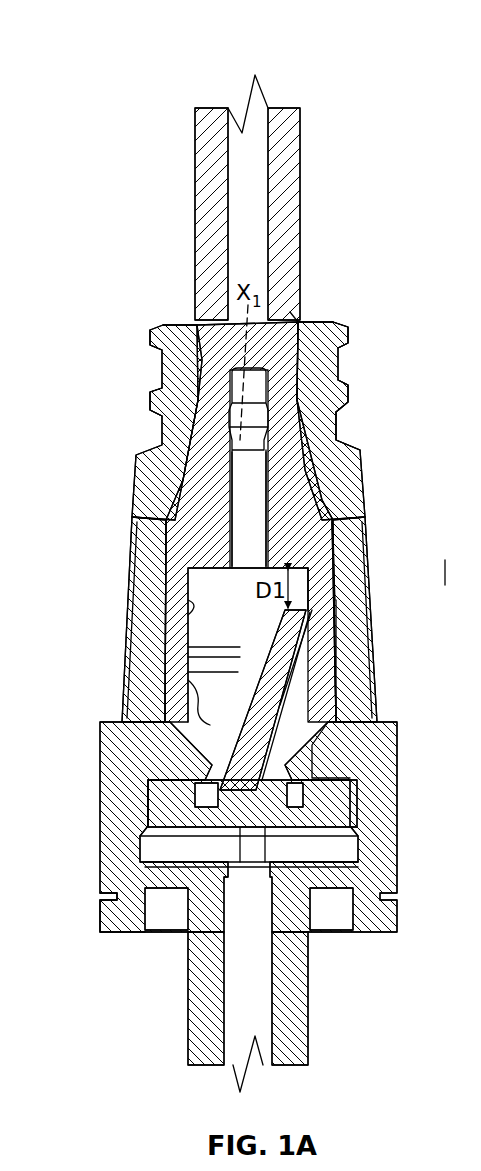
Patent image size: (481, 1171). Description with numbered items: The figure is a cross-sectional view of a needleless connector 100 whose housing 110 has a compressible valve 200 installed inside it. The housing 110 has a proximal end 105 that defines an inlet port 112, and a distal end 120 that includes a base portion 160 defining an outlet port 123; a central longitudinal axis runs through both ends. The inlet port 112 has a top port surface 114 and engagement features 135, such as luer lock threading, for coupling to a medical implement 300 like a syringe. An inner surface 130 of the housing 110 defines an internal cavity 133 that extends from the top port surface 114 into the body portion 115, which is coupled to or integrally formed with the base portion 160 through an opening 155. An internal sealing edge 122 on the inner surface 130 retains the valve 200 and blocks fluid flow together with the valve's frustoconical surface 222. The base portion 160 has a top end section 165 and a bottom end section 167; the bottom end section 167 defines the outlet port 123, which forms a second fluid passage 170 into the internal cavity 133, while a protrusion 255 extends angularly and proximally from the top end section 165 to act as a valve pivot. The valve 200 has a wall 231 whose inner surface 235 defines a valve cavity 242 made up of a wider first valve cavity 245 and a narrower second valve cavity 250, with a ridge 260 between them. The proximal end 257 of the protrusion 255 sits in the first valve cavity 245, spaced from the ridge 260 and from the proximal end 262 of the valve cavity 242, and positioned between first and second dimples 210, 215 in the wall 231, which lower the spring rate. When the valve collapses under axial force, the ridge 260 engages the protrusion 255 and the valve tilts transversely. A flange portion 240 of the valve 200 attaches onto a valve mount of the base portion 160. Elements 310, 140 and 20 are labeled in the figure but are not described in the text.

The needleless connector 100 is at (128, 56).
The medical implement 300 is at (200, 214).
The pipe wall 310 is at (236, 163).
The compressible valve 200 is at (200, 318).
The second valve cavity 250 is at (245, 452).
The first dimple 210 is at (245, 478).
The housing 110 is at (175, 367).
The proximal end 105 is at (320, 325).
The inlet port 112 is at (175, 325).
The top port surface 114 is at (298, 322).
The engagement features 135 is at (350, 338).
The inner surface 130 is at (168, 408).
The internal cavity 133 is at (318, 440).
The body portion 115 is at (157, 552).
The internal sealing edge 122 is at (150, 518).
The right outer wall 140 is at (356, 508).
The frustoconical surface 222 is at (330, 487).
The ridge 260 is at (330, 540).
The proximal end of the valve cavity 262 is at (330, 562).
The device 20 is at (463, 569).
The first valve cavity 245 is at (195, 625).
The inner surface 235 is at (187, 602).
The proximal end of the protrusion 257 is at (330, 603).
The wall 231 is at (320, 652).
The protrusion 255 is at (300, 697).
The second dimple 215 is at (372, 722).
The valve cavity 242 is at (340, 757).
The flange portion 240 is at (150, 770).
The distal end 120 is at (106, 858).
The base portion 160 is at (120, 915).
The top end section 165 is at (360, 836).
The opening 155 is at (372, 882).
The second fluid passage 170 is at (269, 1005).
The outlet port 123 is at (200, 982).
The bottom end section 167 is at (310, 962).